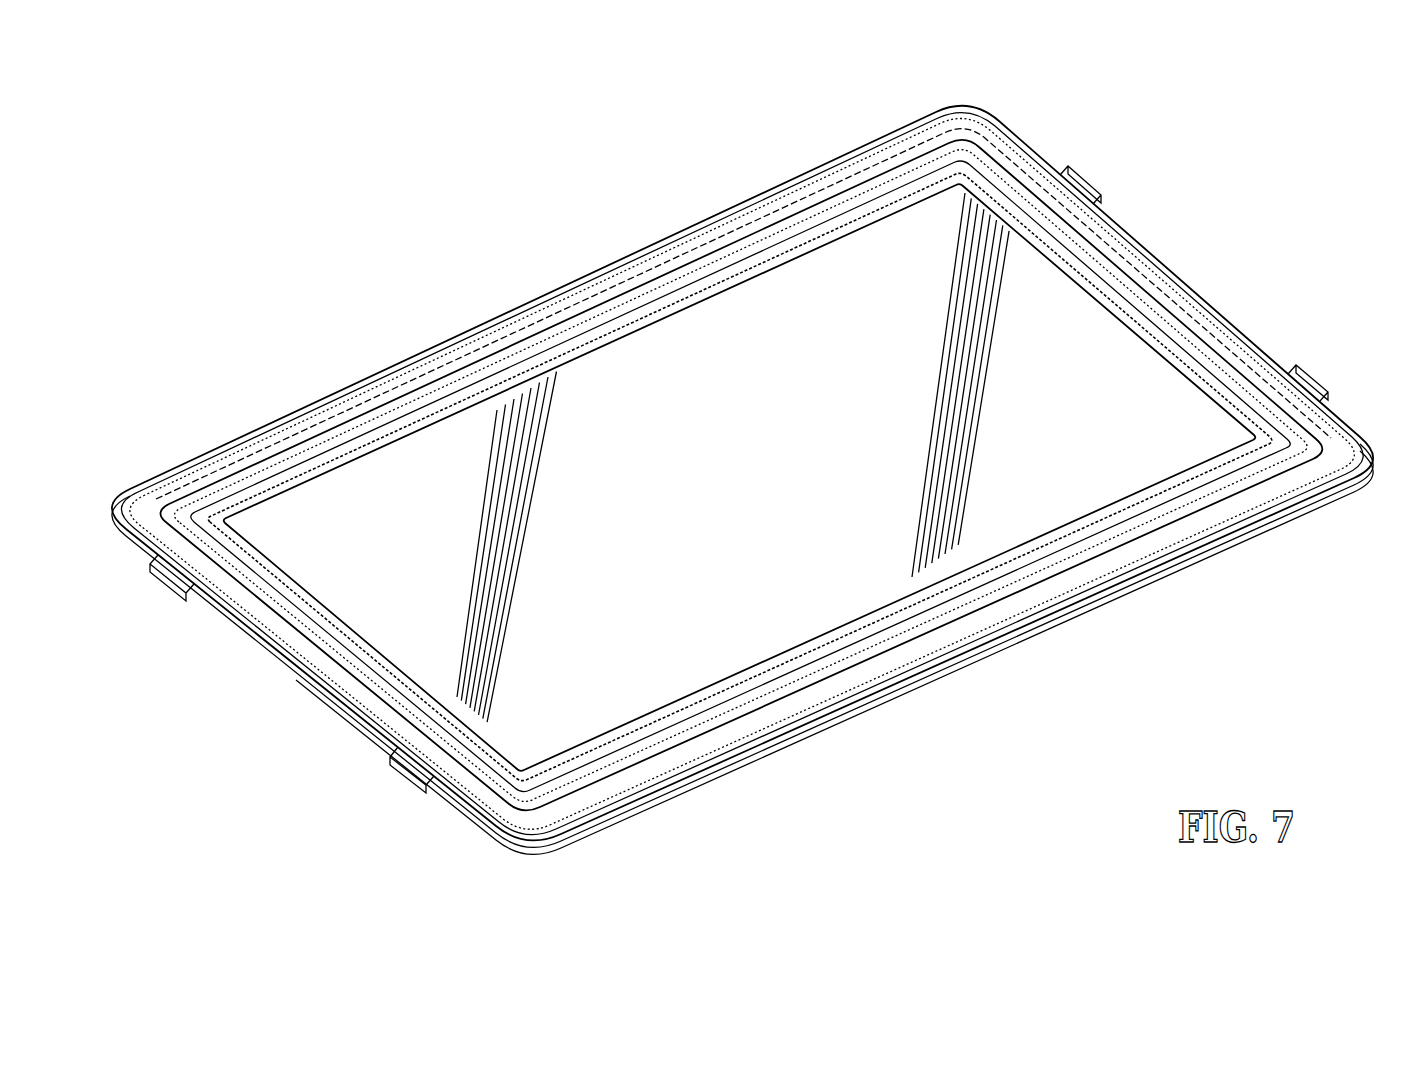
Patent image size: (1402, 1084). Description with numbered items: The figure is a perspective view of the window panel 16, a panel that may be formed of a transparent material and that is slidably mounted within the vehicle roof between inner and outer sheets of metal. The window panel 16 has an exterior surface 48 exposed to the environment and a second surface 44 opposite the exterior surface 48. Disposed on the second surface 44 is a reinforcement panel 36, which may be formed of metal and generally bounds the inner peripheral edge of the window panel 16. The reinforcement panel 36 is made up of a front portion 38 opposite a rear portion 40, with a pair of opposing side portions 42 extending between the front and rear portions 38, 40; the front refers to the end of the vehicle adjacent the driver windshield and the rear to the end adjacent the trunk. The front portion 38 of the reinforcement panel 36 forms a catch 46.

The window panel 16 is at (333, 315).
The reinforcement panel 36 is at (752, 265).
The front portion 38 is at (1147, 520).
The rear portion 40 is at (640, 285).
The side portions 42 is at (1168, 315).
The second surface 44 is at (790, 458).
The catch 46 is at (963, 605).
The exterior surface 48 is at (719, 775).